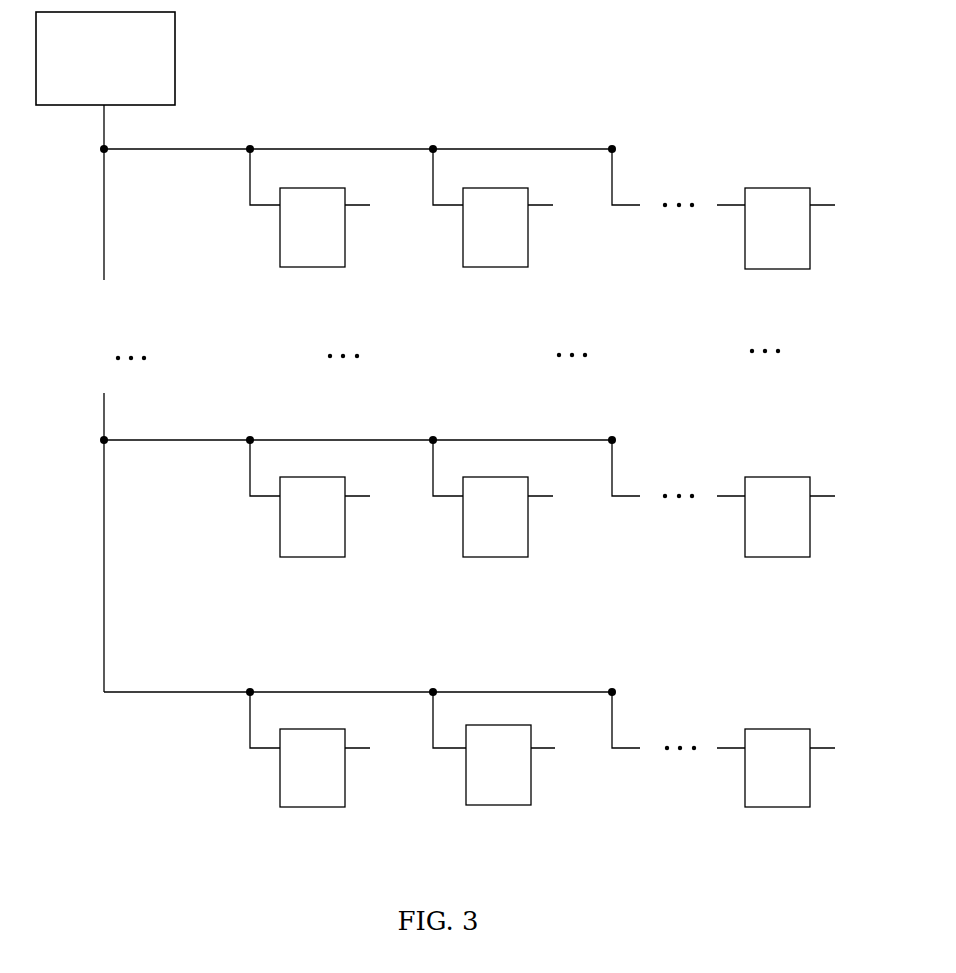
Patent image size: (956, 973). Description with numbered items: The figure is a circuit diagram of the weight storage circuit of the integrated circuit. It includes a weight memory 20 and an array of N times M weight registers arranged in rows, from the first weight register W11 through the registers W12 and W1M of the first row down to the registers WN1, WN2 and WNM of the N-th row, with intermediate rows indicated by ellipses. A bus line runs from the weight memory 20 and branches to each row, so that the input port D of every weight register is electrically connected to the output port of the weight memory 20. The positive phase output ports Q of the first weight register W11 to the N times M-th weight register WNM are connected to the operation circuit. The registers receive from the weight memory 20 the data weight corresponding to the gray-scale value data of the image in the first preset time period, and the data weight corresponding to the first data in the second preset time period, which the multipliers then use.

The weight memory 20 is at (176, 62).
The first weight register W11 is at (310, 226).
The weight register W12 is at (493, 226).
The weight register W1M is at (723, 226).
The weight register WN1 is at (310, 769).
The weight register WN2 is at (494, 769).
The N*M-th weight register WNM is at (723, 769).